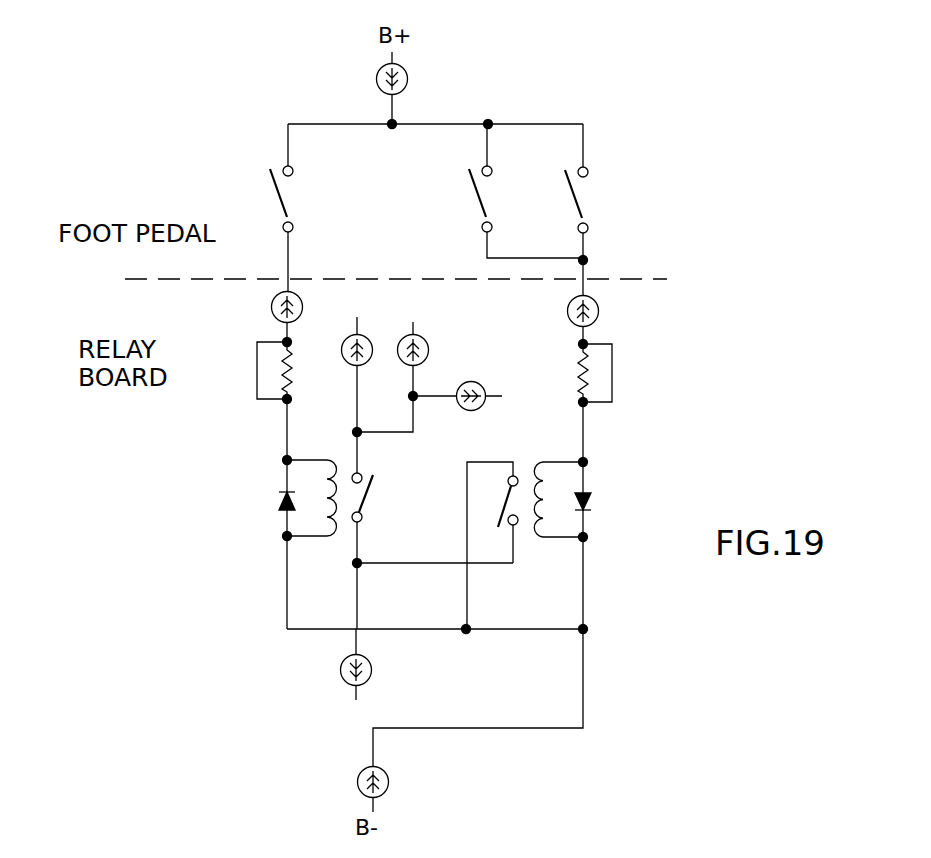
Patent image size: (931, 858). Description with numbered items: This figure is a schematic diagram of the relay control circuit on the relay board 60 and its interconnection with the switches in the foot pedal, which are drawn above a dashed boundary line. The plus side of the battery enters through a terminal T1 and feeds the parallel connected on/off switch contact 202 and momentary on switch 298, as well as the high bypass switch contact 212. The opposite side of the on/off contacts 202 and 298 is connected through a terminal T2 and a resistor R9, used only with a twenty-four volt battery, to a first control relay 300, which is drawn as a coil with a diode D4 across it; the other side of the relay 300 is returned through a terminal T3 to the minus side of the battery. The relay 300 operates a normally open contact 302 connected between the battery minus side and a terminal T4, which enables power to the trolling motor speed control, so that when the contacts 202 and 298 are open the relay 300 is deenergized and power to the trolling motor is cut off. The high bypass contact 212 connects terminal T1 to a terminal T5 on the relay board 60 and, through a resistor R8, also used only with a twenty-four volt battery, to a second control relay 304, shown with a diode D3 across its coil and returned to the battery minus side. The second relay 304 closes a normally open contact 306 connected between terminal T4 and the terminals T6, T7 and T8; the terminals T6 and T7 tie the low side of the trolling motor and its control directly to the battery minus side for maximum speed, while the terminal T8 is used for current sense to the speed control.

The relay board 60 is at (134, 413).
The high bypass switch contact 212 is at (300, 190).
The momentary on switch 298 is at (489, 195).
The on/off switch 202 is at (597, 198).
The first control relay 300 is at (613, 480).
The normally open contact 302 is at (490, 496).
The second control relay 304 is at (267, 520).
The normally open contact 306 is at (383, 491).
The terminal T1 is at (409, 77).
The terminal T2 is at (599, 311).
The terminal T3 is at (389, 780).
The terminal T4 is at (372, 671).
The terminal T5 is at (271, 307).
The terminal T6 is at (365, 334).
The terminal T7 is at (428, 338).
The terminal T8 is at (481, 383).
The resistor R8 is at (296, 374).
The resistor R9 is at (575, 376).
The diode D3 is at (237, 553).
The diode D4 is at (608, 499).